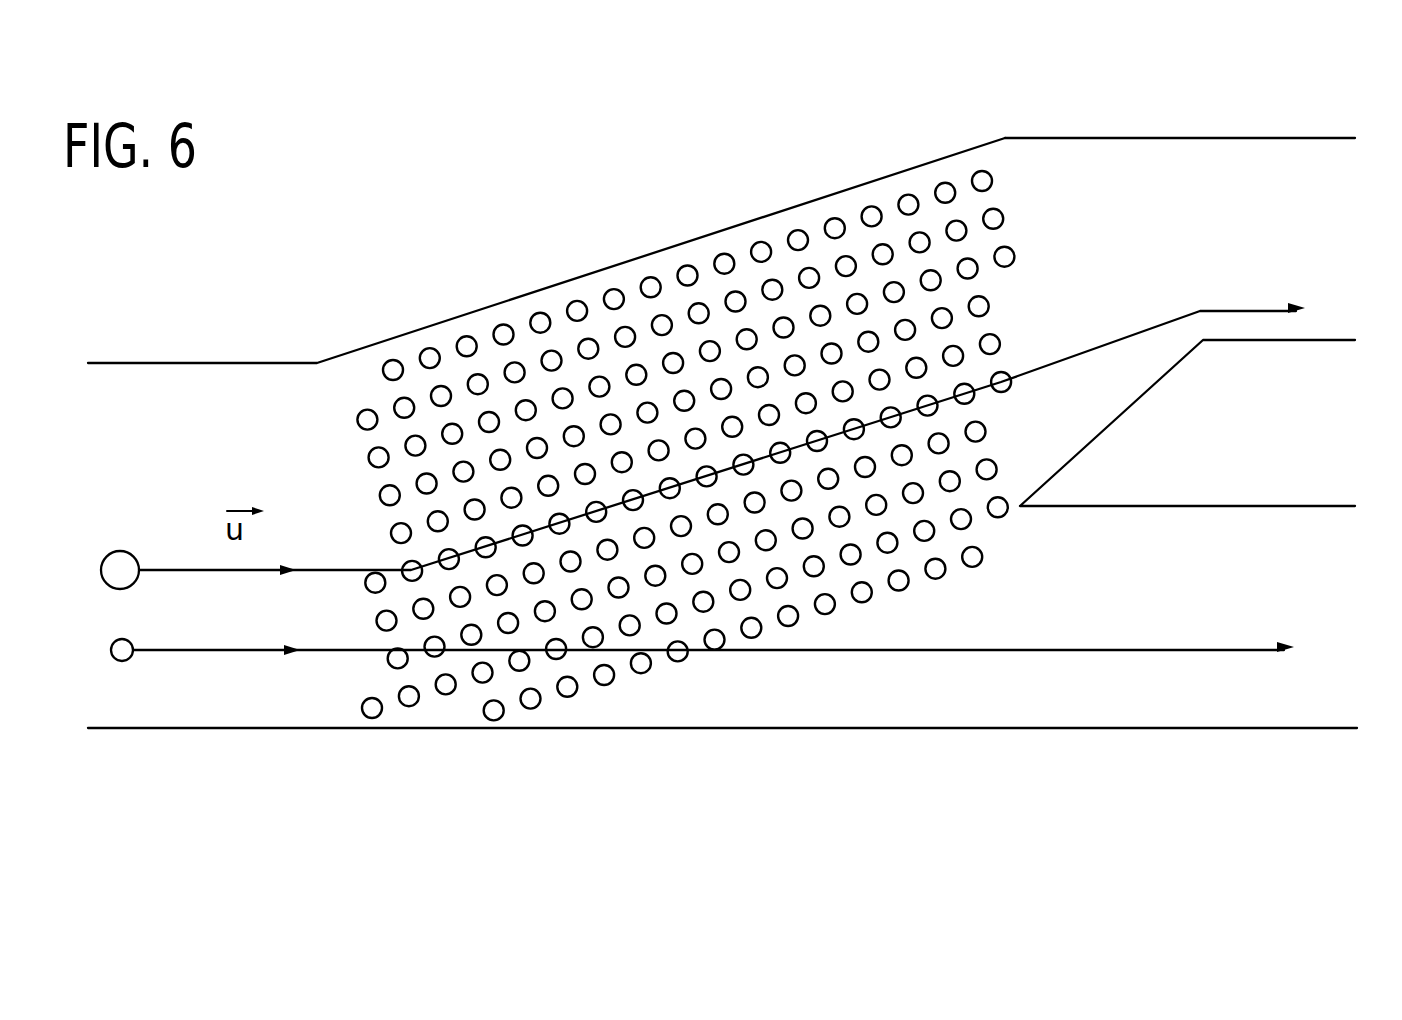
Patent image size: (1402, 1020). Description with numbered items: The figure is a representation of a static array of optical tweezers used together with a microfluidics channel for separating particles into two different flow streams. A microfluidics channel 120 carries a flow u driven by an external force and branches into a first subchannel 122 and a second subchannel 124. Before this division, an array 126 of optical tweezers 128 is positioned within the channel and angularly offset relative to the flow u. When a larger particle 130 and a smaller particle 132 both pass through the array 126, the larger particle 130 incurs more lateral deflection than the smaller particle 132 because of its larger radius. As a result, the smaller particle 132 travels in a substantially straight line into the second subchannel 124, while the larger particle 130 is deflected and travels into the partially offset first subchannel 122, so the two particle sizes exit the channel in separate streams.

The microfluidics channel 120 is at (173, 363).
The first subchannel 122 is at (1153, 138).
The second subchannel 124 is at (1170, 506).
The array 126 is at (462, 395).
The optical tweezers 128 is at (650, 277).
The larger particle 130 is at (197, 568).
The smaller particle 132 is at (190, 652).